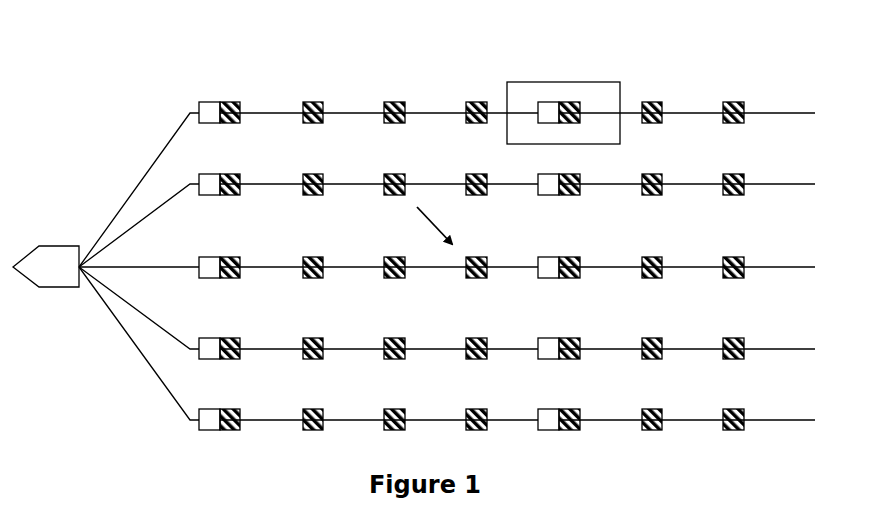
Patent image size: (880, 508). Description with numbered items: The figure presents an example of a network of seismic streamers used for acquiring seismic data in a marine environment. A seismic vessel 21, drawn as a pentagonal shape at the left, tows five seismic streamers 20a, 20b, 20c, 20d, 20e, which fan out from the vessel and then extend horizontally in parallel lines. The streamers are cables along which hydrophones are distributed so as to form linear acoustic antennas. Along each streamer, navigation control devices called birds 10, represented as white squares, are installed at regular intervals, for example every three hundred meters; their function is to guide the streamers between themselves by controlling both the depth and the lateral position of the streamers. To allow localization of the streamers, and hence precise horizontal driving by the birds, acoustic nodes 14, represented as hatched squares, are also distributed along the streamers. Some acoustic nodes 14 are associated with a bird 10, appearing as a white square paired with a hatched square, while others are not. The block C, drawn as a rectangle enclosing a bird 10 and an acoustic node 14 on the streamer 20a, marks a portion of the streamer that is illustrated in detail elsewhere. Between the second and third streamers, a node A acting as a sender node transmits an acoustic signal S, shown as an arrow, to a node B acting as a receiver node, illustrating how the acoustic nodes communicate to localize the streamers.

The bird 10 is at (210, 102).
The acoustic node 14 is at (240, 102).
The seismic streamer 20a is at (180, 118).
The seismic streamer 20b is at (147, 170).
The seismic streamer 20c is at (137, 263).
The seismic streamer 20d is at (127, 307).
The seismic streamer 20e is at (150, 378).
The seismic vessel 21 is at (60, 303).
The sender node A is at (394, 176).
The receiver node B is at (476, 259).
The acoustic signal S is at (434, 225).
The block C is at (612, 82).